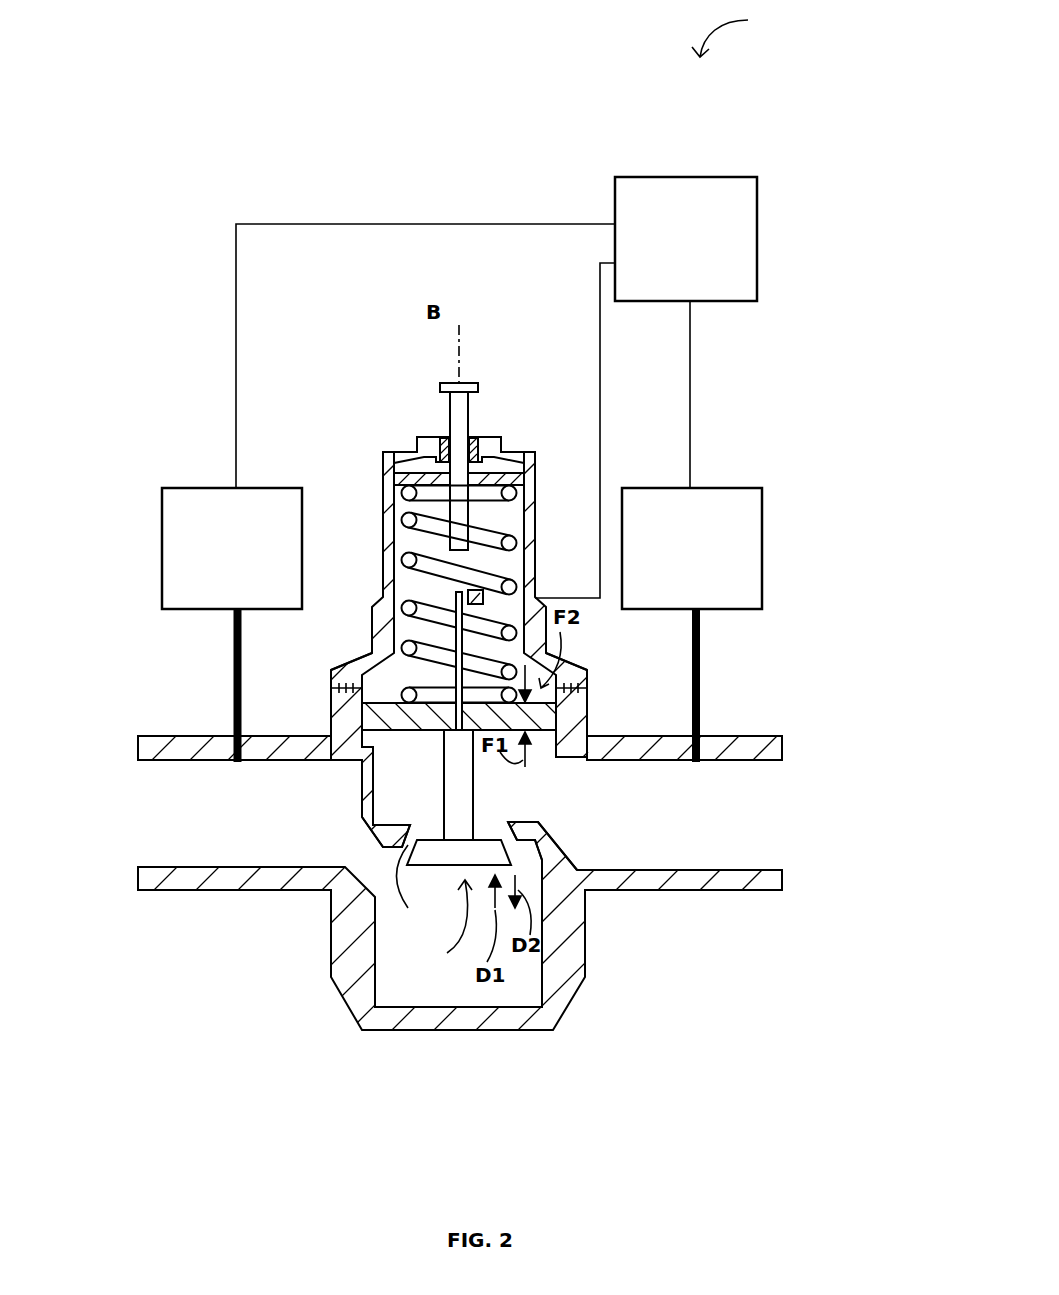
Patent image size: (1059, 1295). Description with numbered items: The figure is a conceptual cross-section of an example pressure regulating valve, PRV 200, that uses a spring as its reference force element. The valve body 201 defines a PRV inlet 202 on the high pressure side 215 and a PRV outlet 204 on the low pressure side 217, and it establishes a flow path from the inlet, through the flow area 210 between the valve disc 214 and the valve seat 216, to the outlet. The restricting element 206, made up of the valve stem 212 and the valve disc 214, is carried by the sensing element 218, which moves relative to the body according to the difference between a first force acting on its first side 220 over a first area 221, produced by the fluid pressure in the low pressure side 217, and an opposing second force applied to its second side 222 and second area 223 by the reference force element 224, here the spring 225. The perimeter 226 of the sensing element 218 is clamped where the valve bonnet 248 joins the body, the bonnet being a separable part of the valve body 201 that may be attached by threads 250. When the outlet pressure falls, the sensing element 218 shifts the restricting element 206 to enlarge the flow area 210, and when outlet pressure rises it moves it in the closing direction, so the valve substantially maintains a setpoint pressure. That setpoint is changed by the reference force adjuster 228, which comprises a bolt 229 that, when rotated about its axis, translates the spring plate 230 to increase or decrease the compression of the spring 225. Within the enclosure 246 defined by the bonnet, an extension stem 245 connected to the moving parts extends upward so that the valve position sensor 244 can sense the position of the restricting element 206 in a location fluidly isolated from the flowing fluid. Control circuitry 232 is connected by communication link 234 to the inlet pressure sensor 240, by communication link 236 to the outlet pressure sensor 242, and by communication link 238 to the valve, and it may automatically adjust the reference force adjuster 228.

The pressure regulating valve 200 is at (742, 32).
The valve body 201 is at (350, 962).
The PRV inlet 202 is at (177, 800).
The PRV outlet 204 is at (741, 800).
The restricting element 206 is at (438, 927).
The flow area 210 is at (410, 892).
The valve stem 212 is at (505, 802).
The valve disc 214 is at (437, 847).
The high pressure side 215 is at (268, 845).
The valve seat 216 is at (410, 845).
The low pressure side 217 is at (673, 845).
The sensing element 218 is at (373, 723).
The first side 220 is at (540, 738).
The first area 221 is at (544, 758).
The second side 222 is at (588, 672).
The second area 223 is at (555, 668).
The reference force element 224 is at (406, 574).
The spring 225 is at (392, 650).
The perimeter 226 is at (380, 700).
The reference force adjuster 228 is at (401, 410).
The bolt 229 is at (462, 420).
The spring plate 230 is at (503, 480).
The control circuitry 232 is at (666, 251).
The communication link 234 is at (366, 222).
The communication link 236 is at (695, 427).
The communication link 238 is at (597, 336).
The inlet pressure sensor 240 is at (212, 563).
The outlet pressure sensor 242 is at (672, 563).
The valve position sensor 244 is at (478, 592).
The extension stem 245 is at (455, 678).
The enclosure 246 is at (402, 507).
The valve bonnet 248 is at (378, 466).
The threads 250 is at (332, 690).